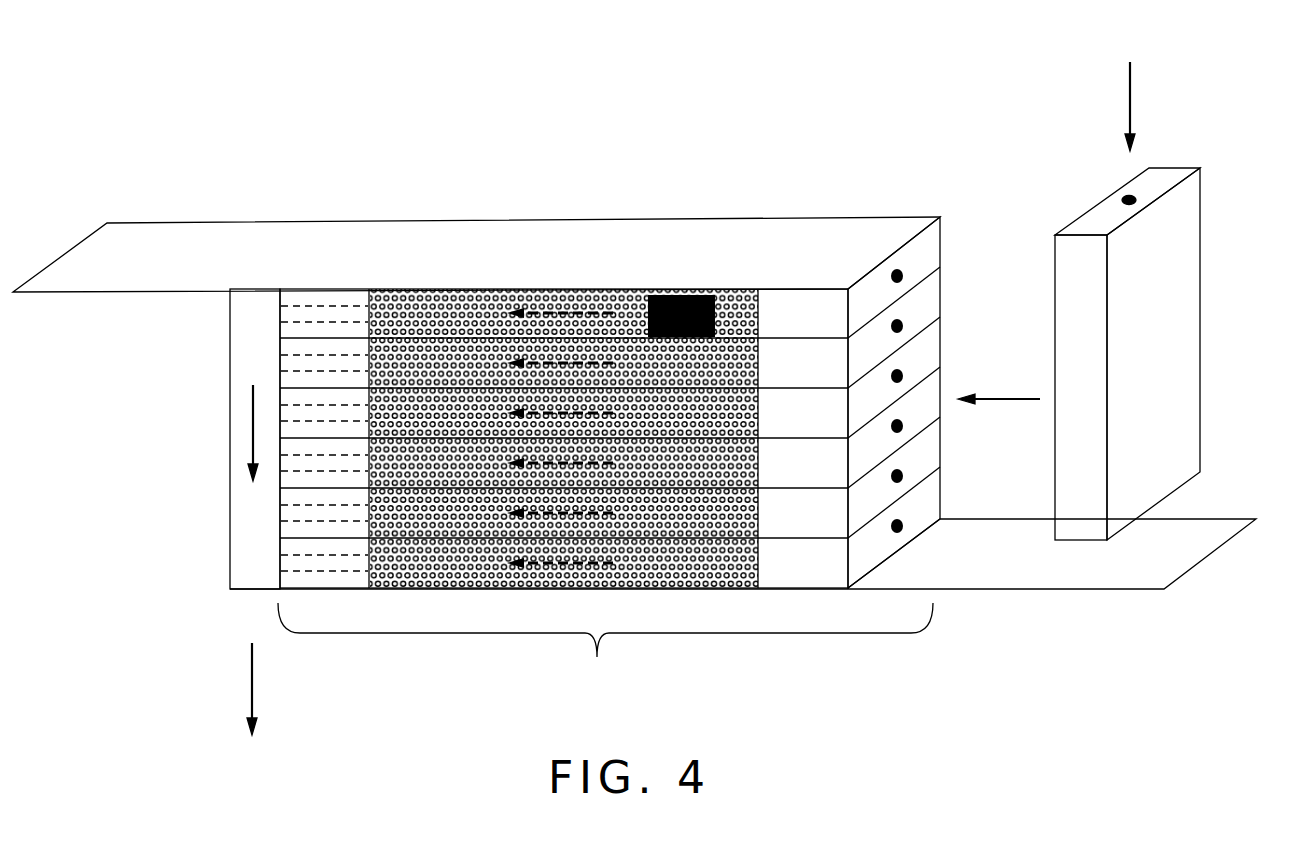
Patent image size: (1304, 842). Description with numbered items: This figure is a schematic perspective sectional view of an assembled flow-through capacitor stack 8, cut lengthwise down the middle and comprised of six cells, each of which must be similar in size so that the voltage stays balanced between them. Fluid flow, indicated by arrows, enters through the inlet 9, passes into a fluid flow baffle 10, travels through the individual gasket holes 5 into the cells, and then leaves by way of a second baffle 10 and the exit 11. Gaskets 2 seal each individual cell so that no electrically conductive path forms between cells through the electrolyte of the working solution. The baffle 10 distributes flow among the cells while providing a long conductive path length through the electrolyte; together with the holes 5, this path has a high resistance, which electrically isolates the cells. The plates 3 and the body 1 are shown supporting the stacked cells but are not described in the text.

The gas sensor body / sensing portion 1 is at (564, 414).
The gasket 2 is at (564, 438).
The support plates 3 is at (634, 403).
The gasket hole 5 is at (951, 285).
The capacitor stack 8 is at (605, 647).
The inlet 9 is at (1130, 91).
The fluid flow baffle 10 is at (210, 521).
The exit 11 is at (233, 689).